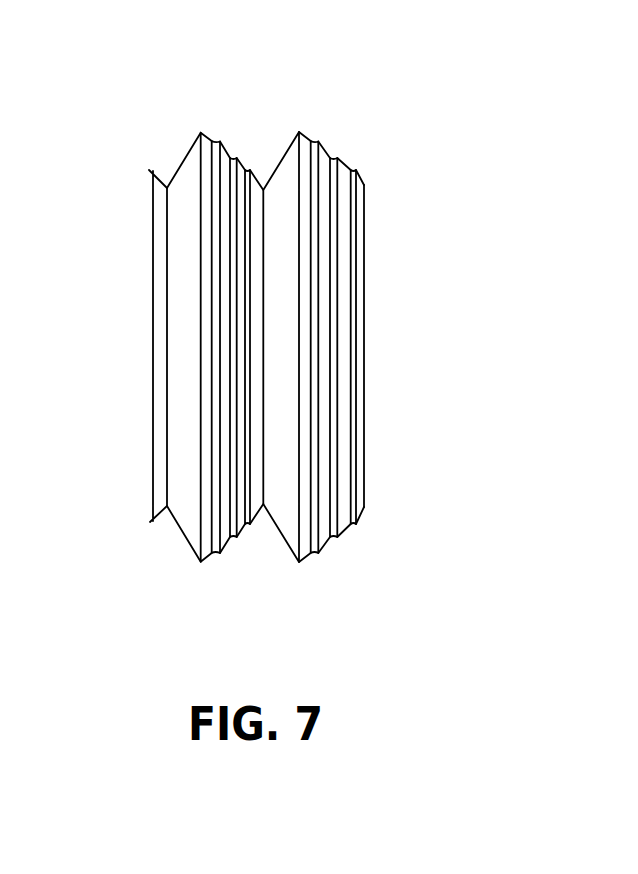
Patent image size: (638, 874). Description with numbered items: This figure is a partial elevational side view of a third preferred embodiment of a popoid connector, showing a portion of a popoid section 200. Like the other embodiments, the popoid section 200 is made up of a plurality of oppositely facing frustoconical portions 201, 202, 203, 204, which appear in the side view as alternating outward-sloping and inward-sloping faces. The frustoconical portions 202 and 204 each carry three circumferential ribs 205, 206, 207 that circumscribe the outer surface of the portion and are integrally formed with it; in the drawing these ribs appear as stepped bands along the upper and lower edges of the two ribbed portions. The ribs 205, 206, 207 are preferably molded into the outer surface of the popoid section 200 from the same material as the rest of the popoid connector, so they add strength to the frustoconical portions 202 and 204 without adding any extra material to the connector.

The popoid section 200 is at (320, 92).
The frustoconical portion 201 is at (181, 165).
The frustoconical portion 202 is at (211, 137).
The frustoconical portion 203 is at (290, 560).
The frustoconical portion 204 is at (340, 527).
The circumferential rib 205 is at (318, 140).
The circumferential rib 206 is at (338, 158).
The circumferential rib 207 is at (352, 171).